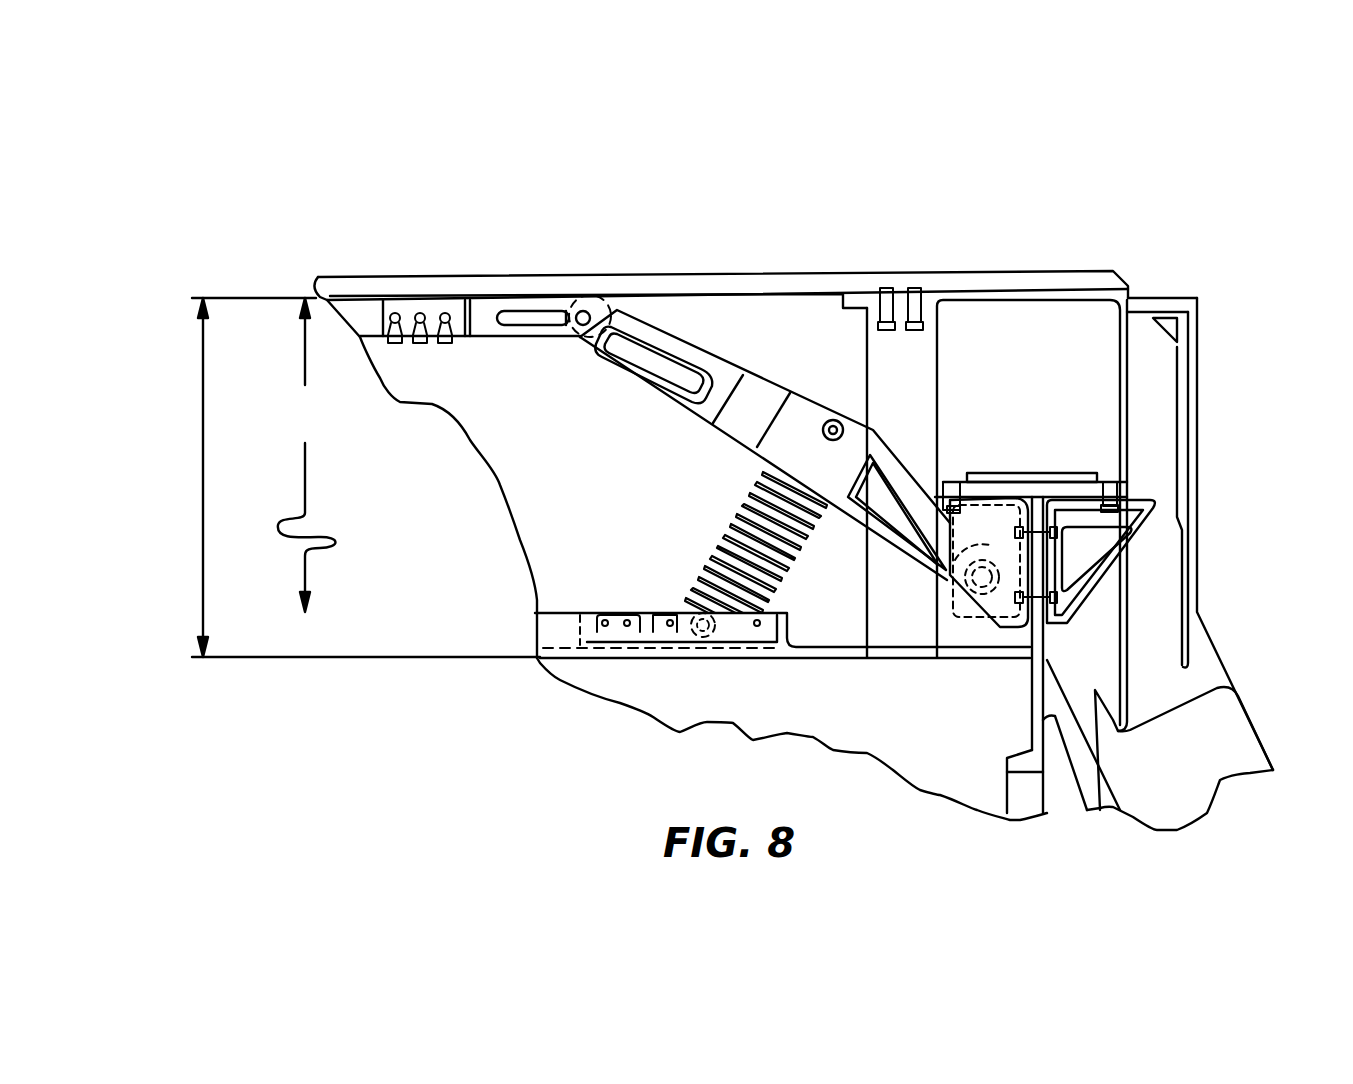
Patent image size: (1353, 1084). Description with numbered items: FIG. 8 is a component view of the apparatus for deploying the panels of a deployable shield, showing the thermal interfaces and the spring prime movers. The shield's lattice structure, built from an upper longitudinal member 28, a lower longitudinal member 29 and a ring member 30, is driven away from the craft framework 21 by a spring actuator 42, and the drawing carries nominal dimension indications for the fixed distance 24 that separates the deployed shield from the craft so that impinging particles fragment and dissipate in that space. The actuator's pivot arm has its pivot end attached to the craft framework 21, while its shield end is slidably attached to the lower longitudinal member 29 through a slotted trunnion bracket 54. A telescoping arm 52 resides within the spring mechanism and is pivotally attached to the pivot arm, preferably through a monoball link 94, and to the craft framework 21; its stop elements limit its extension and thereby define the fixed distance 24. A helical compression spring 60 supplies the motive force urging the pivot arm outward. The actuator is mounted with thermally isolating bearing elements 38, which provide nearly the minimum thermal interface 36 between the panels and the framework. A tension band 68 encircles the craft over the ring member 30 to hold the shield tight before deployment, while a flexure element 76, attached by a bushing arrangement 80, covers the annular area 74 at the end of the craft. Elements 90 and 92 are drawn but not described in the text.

The craft framework 21 is at (1037, 652).
The fixed distance 24 is at (203, 565).
The upper longitudinal member 28 is at (530, 273).
The lower longitudinal member 29 is at (323, 281).
The ring member 30 is at (922, 390).
The thermal interface 36 is at (597, 295).
The thermally isolating bearing element 38 is at (590, 326).
The spring actuator 42 is at (862, 428).
The telescoping arm 52 is at (683, 597).
The slotted trunnion bracket 54 is at (478, 306).
The helical compression spring 60 is at (745, 500).
The tension band 68 is at (1158, 298).
The annular area 74 is at (1157, 412).
The flexure element 76 is at (1185, 463).
The bushing arrangement 80 is at (1198, 322).
The mounting plate 90 is at (990, 473).
The bracket 92 is at (637, 640).
The monoball link 94 is at (826, 413).